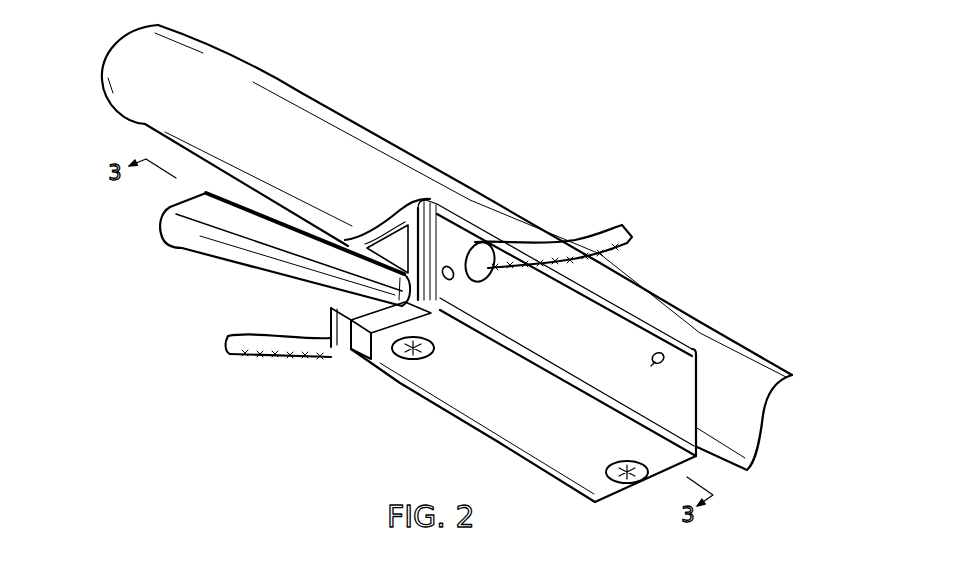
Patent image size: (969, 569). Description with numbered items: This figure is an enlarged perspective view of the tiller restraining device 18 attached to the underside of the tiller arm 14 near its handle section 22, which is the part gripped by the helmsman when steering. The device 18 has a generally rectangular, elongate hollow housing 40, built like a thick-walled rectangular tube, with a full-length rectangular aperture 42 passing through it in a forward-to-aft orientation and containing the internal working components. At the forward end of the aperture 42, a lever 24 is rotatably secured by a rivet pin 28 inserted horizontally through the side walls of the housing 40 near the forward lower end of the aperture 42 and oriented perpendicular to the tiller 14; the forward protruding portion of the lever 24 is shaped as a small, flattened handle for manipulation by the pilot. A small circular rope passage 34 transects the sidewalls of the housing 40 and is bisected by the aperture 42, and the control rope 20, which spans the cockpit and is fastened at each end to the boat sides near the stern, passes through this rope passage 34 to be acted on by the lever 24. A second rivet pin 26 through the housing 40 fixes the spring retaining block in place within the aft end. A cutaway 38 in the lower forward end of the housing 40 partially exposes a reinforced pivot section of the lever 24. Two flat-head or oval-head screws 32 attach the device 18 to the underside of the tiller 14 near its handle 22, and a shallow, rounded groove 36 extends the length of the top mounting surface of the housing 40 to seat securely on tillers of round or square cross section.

The tiller arm 14 is at (680, 313).
The tiller restraining device 18 is at (420, 429).
The control rope 20 is at (285, 357).
The handle section 22 is at (330, 106).
The lever 24 is at (212, 258).
The second rivet pin 26 is at (655, 363).
The rivet pin 28 is at (455, 278).
The screws 32 is at (433, 352).
The rope passage 34 is at (497, 275).
The groove 36 is at (390, 228).
The cutaway 38 is at (361, 360).
The housing 40 is at (522, 463).
The aperture 42 is at (395, 237).